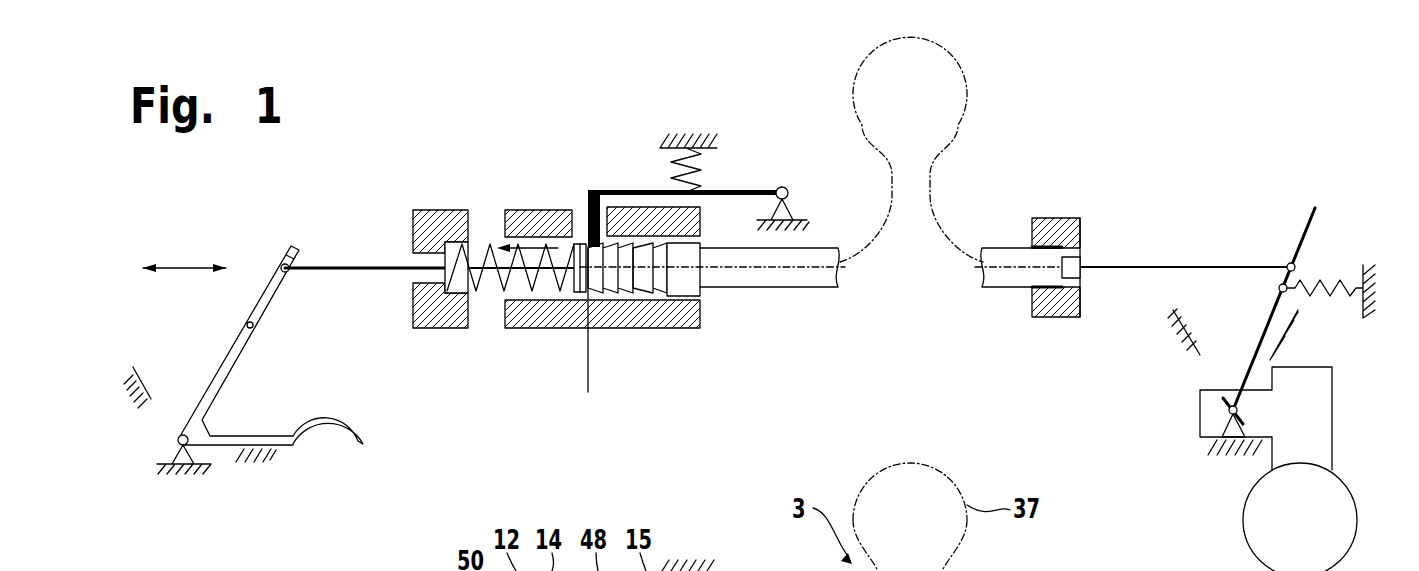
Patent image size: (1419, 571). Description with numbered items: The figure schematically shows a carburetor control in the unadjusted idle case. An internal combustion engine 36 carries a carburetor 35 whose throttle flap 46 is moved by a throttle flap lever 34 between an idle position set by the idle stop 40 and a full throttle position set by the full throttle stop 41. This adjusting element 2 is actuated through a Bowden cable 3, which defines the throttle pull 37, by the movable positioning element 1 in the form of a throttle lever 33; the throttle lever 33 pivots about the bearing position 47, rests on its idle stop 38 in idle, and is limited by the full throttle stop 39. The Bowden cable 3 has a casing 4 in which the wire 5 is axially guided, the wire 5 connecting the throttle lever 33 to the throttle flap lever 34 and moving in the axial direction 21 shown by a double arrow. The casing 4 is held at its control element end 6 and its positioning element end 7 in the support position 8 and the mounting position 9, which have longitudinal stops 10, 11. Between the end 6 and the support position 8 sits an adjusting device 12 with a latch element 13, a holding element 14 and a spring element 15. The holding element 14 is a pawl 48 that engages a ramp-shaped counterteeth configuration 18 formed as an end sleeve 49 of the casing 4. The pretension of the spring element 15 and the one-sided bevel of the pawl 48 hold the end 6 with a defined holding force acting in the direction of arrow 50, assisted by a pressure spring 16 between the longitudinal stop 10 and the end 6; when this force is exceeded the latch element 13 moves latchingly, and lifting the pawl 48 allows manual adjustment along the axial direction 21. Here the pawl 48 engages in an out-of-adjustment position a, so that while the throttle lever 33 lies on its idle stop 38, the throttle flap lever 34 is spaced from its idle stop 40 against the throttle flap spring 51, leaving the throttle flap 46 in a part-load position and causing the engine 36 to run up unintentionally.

The positioning element 1 is at (231, 416).
The adjusting element 2 is at (1261, 303).
The Bowden cable 3 is at (854, 139).
The Bowden cable casing 4 is at (795, 275).
The wire 5 is at (340, 266).
The control element end 6 is at (716, 296).
The positioning element end 7 is at (1012, 298).
The control element support position 8 is at (443, 218).
The mounting position 9 is at (1047, 218).
The longitudinal stop 10 is at (444, 244).
The longitudinal stop 11 is at (1081, 249).
The adjusting device 12 is at (530, 189).
The latch element 13 is at (622, 285).
The holding element 14 is at (580, 215).
The spring element 15 is at (672, 170).
The pressure spring 16 is at (488, 289).
The counterteeth configuration 18 is at (600, 276).
The axial direction 21 is at (186, 266).
The throttle lever 33 is at (322, 428).
The throttle flap lever 34 is at (1256, 362).
The carburetor 35 is at (1200, 430).
The internal combustion engine 36 is at (1318, 540).
The throttle pull 37 is at (968, 80).
The idle stop 38 is at (248, 462).
The full throttle stop 39 is at (143, 372).
The idle stop 40 is at (1295, 334).
The full throttle stop 41 is at (1173, 340).
The throttle flap 46 is at (1220, 405).
The bearing position 47 is at (178, 442).
The pawl 48 is at (590, 212).
The end sleeve 49 is at (680, 290).
The arrow 50 is at (528, 250).
The throttle flap spring 51 is at (1328, 280).
The out-of-adjustment position a is at (588, 370).